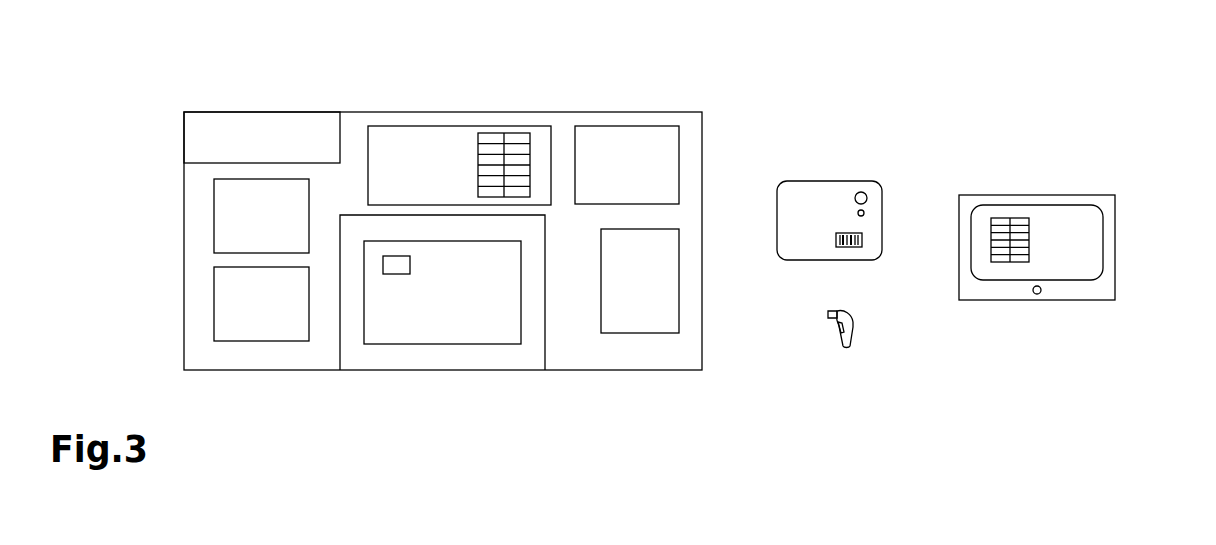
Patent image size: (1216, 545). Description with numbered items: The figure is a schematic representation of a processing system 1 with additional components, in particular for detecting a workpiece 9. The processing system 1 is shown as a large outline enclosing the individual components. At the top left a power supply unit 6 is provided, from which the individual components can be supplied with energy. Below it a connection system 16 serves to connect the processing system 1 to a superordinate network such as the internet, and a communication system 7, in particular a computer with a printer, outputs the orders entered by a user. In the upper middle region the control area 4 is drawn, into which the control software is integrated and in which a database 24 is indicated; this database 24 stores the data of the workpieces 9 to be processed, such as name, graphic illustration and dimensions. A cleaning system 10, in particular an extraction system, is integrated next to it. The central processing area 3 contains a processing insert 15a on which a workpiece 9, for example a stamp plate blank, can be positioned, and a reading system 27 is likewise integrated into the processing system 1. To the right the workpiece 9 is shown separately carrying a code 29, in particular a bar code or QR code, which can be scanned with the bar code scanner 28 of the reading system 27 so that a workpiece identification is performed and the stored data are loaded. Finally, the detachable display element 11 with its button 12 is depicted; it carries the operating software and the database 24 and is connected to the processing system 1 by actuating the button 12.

The processing system 1 is at (575, 337).
The processing area 3 is at (537, 345).
The control area 4 is at (398, 152).
The power supply unit 6 is at (272, 130).
The communication system 7 is at (242, 297).
The workpiece 9 is at (396, 266).
The cleaning system 10 is at (658, 152).
The display element 11 is at (1092, 250).
The button 12 is at (1039, 294).
The processing insert 15a is at (472, 322).
The connection system 16 is at (247, 211).
The database 24 is at (513, 149).
The reading system 27 is at (656, 294).
The bar code scanner 28 is at (853, 320).
The code 29 is at (862, 247).